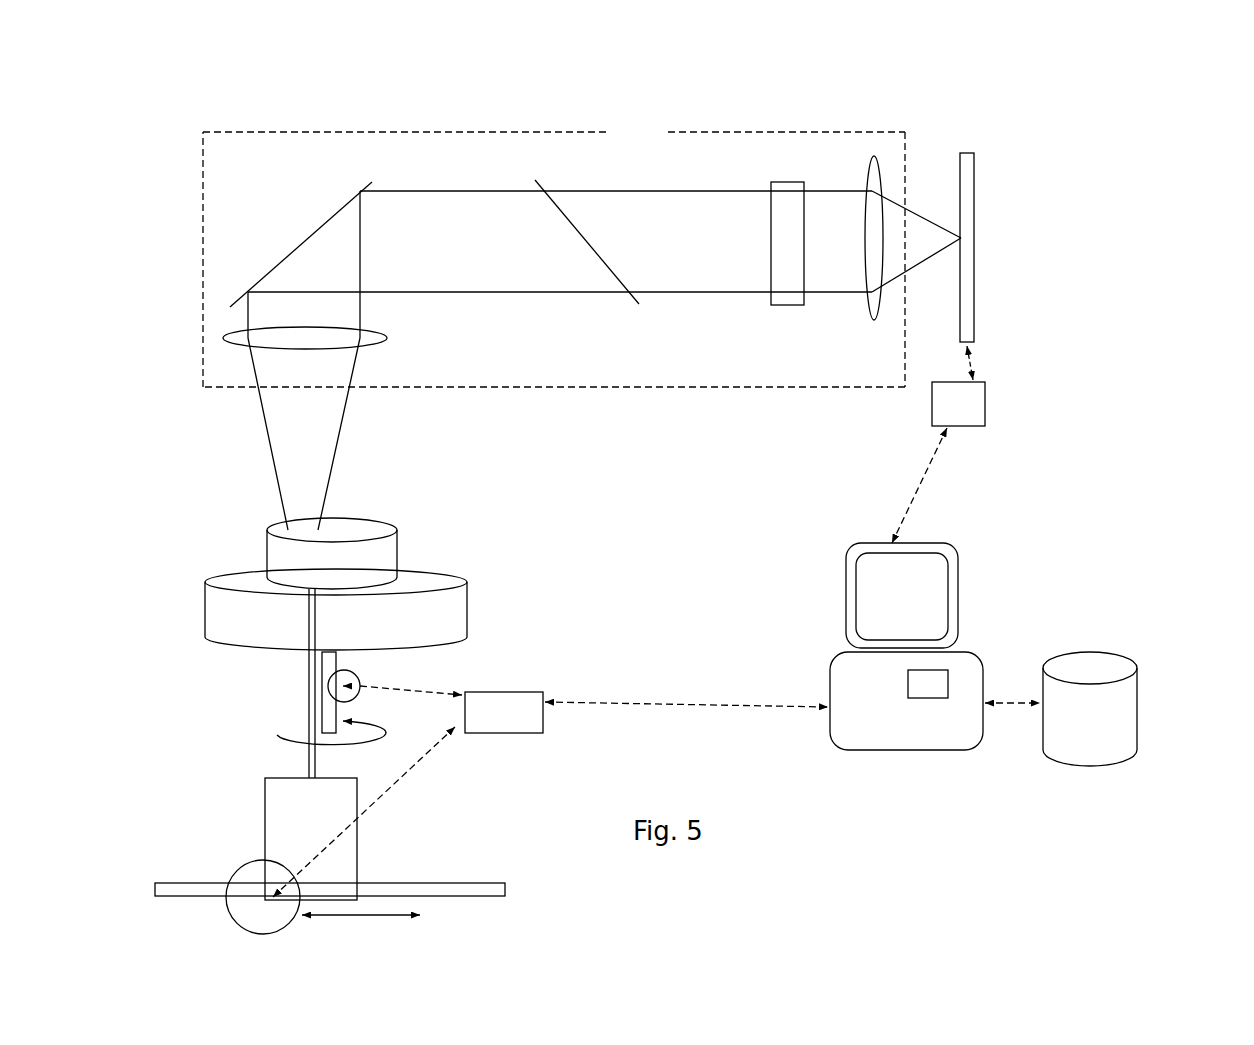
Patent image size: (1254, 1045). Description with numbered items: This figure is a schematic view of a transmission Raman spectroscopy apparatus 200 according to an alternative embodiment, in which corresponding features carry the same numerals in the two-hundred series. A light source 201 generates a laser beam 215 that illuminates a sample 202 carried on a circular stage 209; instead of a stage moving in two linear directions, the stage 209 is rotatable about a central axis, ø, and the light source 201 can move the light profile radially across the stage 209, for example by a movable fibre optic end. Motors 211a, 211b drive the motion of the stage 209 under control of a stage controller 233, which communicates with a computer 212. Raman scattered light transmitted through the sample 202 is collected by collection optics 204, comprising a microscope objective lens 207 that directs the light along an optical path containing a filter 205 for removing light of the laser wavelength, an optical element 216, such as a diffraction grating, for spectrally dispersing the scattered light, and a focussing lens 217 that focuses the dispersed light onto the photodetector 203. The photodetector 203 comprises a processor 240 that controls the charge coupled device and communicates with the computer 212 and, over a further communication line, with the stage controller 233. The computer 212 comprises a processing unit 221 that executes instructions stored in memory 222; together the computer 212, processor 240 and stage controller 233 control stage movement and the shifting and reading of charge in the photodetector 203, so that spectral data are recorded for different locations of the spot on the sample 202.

The transmission Raman spectroscopy apparatus 200 is at (708, 103).
The light source 201 is at (359, 862).
The sample 202 is at (373, 535).
The photodetector 203 is at (976, 160).
The collection optics 204 is at (705, 389).
The filter 205 is at (547, 188).
The microscope objective lens 207 is at (221, 339).
The circular stage 209 is at (260, 518).
The motor 211a is at (247, 905).
The motor 211b is at (329, 687).
The computer 212 is at (986, 670).
The laser beam 215 is at (308, 760).
The optical element 216 is at (778, 178).
The focussing lens 217 is at (876, 151).
The processing unit 221 is at (929, 682).
The memory 222 is at (1125, 723).
The stage controller 233 is at (523, 735).
The processor 240 is at (928, 397).